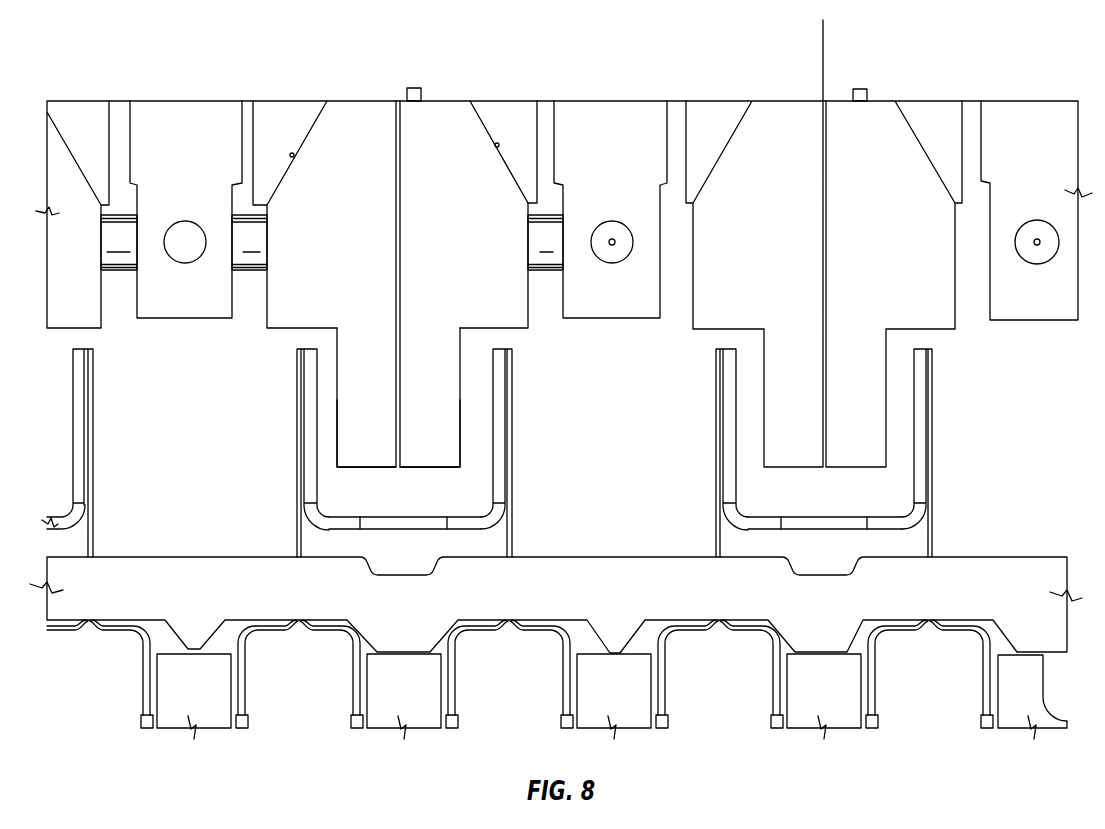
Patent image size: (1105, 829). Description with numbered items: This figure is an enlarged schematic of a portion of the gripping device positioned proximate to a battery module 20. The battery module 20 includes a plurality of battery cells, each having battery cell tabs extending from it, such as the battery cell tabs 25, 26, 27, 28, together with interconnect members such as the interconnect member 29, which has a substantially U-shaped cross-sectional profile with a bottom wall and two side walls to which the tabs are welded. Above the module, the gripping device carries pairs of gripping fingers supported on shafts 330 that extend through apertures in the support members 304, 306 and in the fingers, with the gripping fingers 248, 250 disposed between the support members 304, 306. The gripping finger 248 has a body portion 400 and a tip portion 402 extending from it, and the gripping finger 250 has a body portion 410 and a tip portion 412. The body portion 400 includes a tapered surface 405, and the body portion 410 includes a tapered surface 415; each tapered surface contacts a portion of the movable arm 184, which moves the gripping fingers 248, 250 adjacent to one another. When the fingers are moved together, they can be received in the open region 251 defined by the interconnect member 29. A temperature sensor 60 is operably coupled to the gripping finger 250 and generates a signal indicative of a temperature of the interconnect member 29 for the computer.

The movable arm 184 is at (282, 113).
The body portion 400 is at (343, 120).
The body portion 410 is at (443, 110).
The tip portion 402 is at (340, 440).
The tip portion 412 is at (430, 455).
The temperature sensor 60 is at (413, 88).
The tapered surface 405 is at (292, 157).
The tapered surface 415 is at (496, 147).
The support member 304 is at (173, 312).
The support member 306 is at (613, 318).
The shaft 330 is at (257, 263).
The gripping finger 248 is at (273, 320).
The gripping finger 250 is at (521, 321).
The open region 251 is at (473, 422).
The interconnect member 29 is at (343, 516).
The battery module 20 is at (559, 555).
The battery cell tab 25 is at (247, 641).
The battery cell tab 26 is at (347, 636).
The battery cell tab 27 is at (458, 641).
The battery cell tab 28 is at (555, 637).